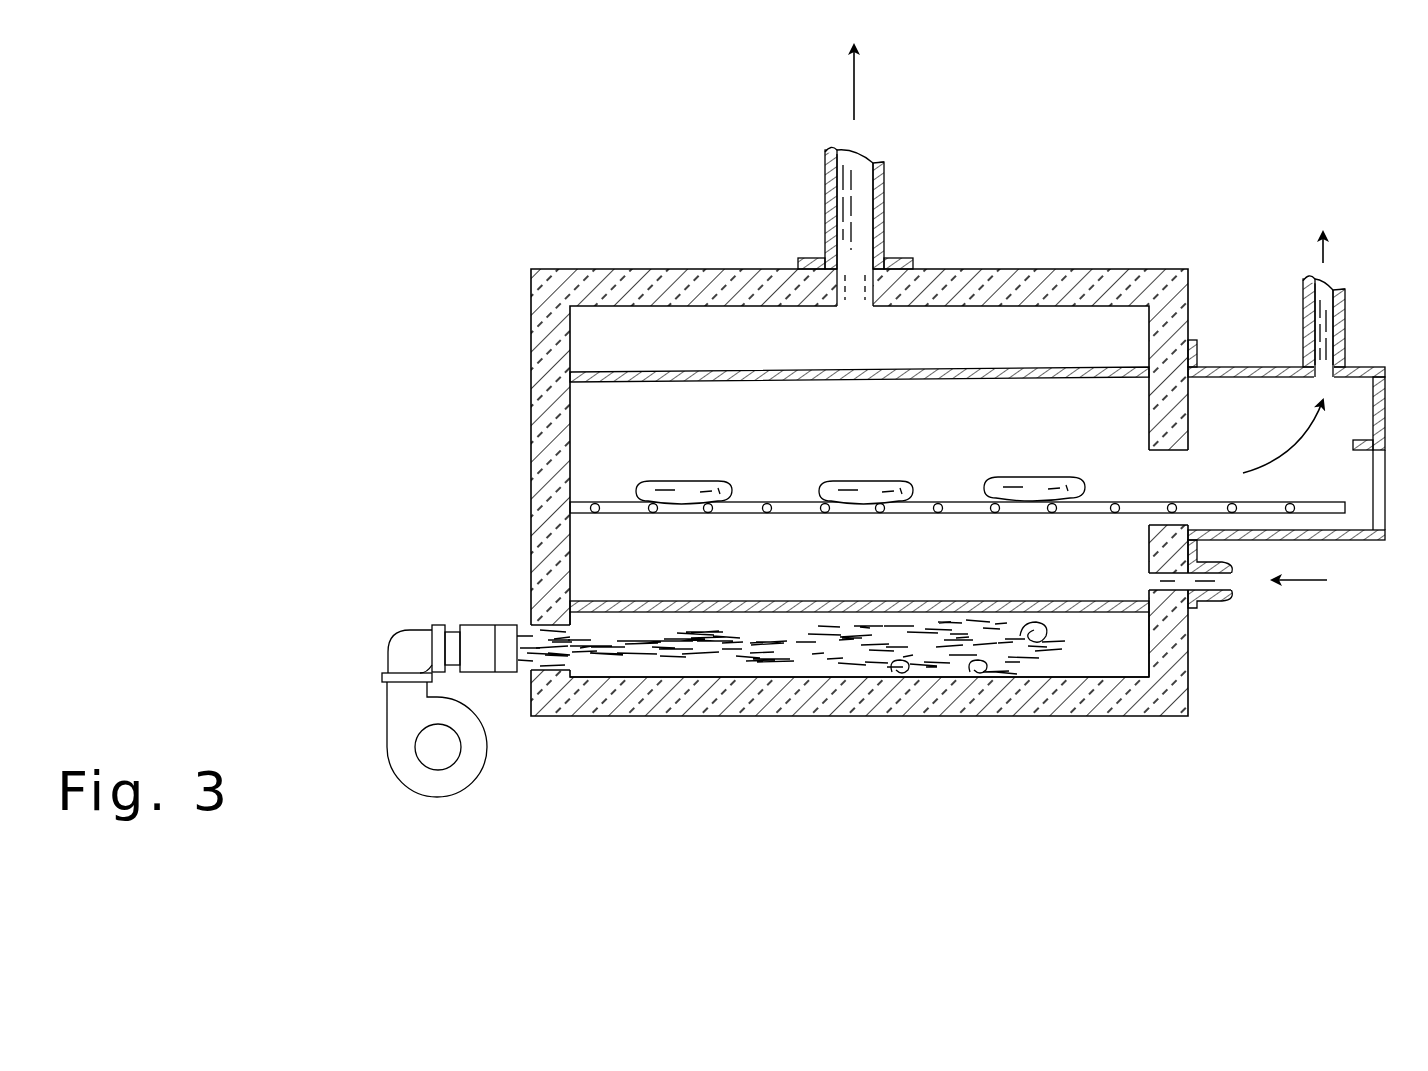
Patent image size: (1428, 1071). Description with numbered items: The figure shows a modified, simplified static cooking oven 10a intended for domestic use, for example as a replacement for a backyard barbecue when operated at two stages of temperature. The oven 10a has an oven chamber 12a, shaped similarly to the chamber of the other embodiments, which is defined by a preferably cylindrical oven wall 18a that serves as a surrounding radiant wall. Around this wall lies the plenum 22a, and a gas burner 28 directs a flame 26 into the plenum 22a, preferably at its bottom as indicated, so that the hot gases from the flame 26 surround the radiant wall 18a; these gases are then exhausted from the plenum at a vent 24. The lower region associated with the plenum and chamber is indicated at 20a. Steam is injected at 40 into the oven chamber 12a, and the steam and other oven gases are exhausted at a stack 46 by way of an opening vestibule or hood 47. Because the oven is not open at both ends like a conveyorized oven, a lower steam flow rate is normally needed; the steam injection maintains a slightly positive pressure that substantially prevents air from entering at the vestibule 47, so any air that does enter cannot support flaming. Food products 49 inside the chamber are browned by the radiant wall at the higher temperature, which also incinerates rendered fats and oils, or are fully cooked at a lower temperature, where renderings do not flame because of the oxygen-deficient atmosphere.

The cooking oven 10a is at (1252, 163).
The oven chamber 12a is at (623, 562).
The oven wall 18a is at (1062, 364).
The lower chamber 20a is at (1115, 612).
The plenum 22a is at (1082, 650).
The vent 24 is at (884, 218).
The flame 26 is at (745, 645).
The gas burner 28 is at (388, 772).
The steam injection point 40 is at (1222, 606).
The stack 46 is at (1345, 310).
The vestibule or hood 47 is at (1362, 367).
The food products 49 is at (836, 480).